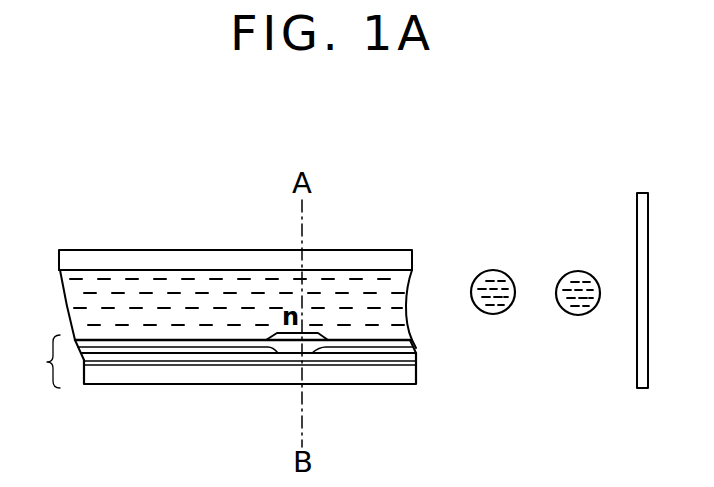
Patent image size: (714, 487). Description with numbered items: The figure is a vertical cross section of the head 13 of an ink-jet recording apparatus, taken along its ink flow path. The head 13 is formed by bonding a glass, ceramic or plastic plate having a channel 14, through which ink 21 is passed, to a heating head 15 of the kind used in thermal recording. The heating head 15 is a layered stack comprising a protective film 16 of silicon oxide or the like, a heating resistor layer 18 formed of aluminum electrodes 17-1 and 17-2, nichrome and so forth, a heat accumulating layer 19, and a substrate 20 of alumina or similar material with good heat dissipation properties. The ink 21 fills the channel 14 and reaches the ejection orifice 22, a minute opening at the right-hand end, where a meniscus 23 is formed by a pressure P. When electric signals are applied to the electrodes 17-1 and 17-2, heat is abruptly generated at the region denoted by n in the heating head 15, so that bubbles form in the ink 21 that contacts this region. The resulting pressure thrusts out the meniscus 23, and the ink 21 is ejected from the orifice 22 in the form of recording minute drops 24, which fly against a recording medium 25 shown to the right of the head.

The head 13 is at (157, 249).
The channel 14 is at (223, 270).
The ink 21 is at (88, 275).
The heating head 15 is at (37, 361).
The protective film 16 is at (105, 340).
The aluminum electrode 17-1 is at (150, 349).
The aluminum electrode 17-2 is at (381, 355).
The heating resistor layer 18 is at (216, 357).
The heat accumulating layer 19 is at (254, 372).
The substrate 20 is at (332, 385).
The ejection orifice 22 is at (417, 335).
The meniscus 23 is at (407, 308).
The recording minute drops 24 is at (602, 267).
The recording medium 25 is at (642, 230).